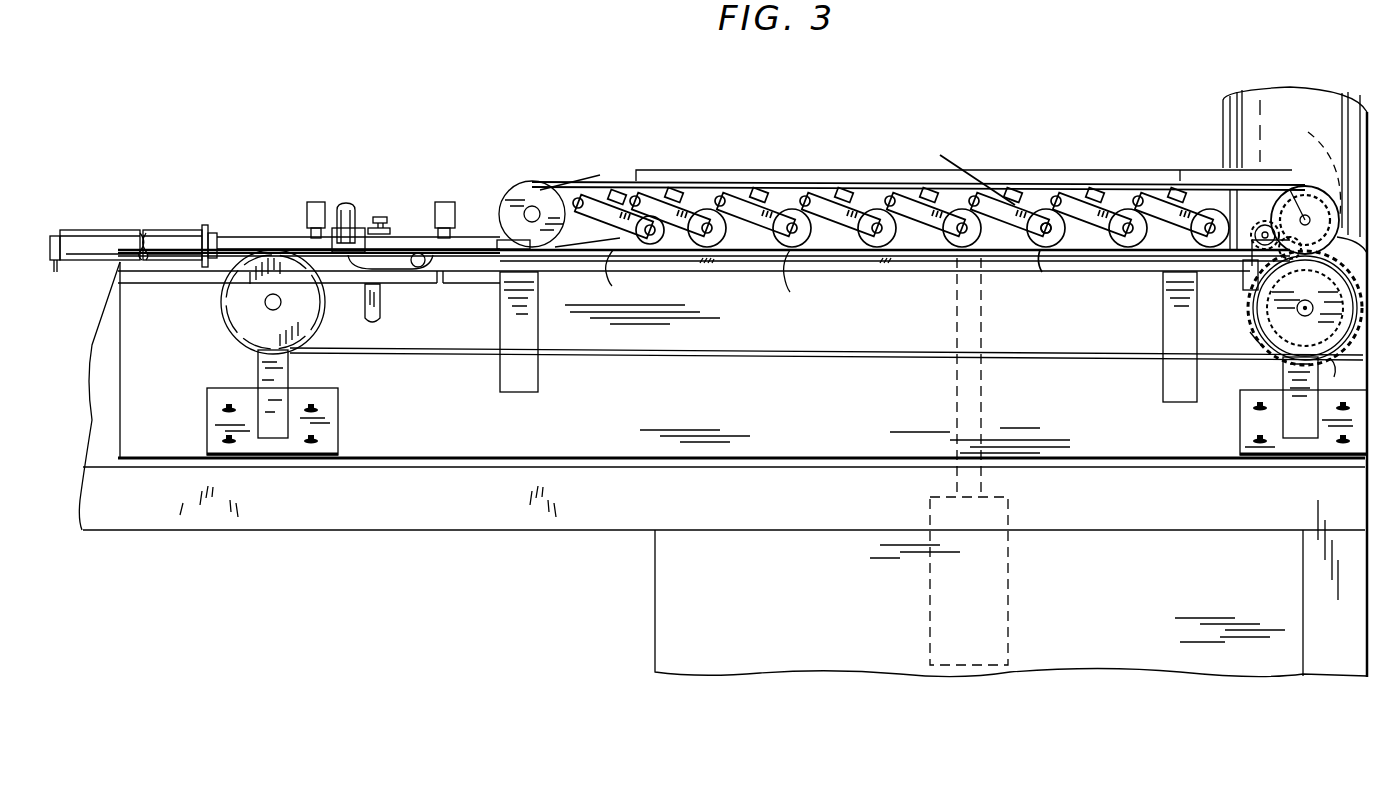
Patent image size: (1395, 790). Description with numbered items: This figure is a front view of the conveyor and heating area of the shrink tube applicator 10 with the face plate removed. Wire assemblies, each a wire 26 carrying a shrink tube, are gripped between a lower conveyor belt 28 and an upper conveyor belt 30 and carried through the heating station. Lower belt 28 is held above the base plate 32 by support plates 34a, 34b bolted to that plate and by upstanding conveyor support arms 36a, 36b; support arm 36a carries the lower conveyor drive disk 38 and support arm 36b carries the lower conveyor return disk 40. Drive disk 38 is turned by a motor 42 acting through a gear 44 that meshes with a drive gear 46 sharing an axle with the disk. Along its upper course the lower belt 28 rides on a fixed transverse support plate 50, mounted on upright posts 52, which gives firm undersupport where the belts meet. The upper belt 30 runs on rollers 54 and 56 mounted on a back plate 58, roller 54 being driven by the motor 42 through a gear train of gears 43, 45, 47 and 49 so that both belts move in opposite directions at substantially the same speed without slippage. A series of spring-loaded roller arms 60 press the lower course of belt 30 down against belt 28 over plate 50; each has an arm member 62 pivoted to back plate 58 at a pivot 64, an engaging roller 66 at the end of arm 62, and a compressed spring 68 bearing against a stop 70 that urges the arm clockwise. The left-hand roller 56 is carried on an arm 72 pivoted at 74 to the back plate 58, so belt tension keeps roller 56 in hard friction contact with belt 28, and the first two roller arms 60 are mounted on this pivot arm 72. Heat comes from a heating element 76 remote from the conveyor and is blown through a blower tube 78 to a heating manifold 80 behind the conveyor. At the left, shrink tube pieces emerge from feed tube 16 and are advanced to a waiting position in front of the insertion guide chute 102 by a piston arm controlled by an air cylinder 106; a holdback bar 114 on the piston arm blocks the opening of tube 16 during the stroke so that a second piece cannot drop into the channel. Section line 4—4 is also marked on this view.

The section line 4- 4 is at (112, 155).
The shrink tube applicator 10 is at (760, 158).
The feed tube 16 is at (350, 206).
The wire 26 is at (792, 280).
The lower conveyor belt 28 is at (637, 358).
The upper conveyor belt 30 is at (619, 180).
The base plate 32 is at (772, 432).
The support plate 34a is at (1244, 438).
The support plate 34b is at (325, 420).
The conveyor support arm 36a is at (1283, 385).
The conveyor support arm 36b is at (262, 380).
The lower conveyor drive disk 38 is at (1305, 308).
The lower conveyor return disk 40 is at (222, 314).
The motor 42 is at (1235, 117).
The gear 43 is at (1256, 337).
The gear 44 is at (1290, 190).
The gear 45 is at (1245, 284).
The drive gear 46 is at (1345, 380).
The gear 47 is at (1263, 221).
The gear 49 is at (1311, 159).
The fixed transverse support plate 50 is at (690, 266).
The support post 52 is at (510, 326).
The roller 54 is at (1322, 212).
The upper conveyor roller 56 is at (520, 192).
The back plate 58 is at (1223, 202).
The spring-loaded roller arm 60 is at (1033, 192).
The arm member 62 is at (985, 190).
The pivot 64 is at (964, 218).
The pivot pin 66 is at (1042, 256).
The compressed spring 68 is at (1020, 235).
The stop 70 is at (970, 168).
The arm 72 is at (578, 190).
The pivot 74 is at (668, 192).
The heating element 76 is at (1000, 566).
The blower tube 78 is at (982, 396).
The heating manifold 80 is at (1163, 256).
The insertion guide chute 102 is at (508, 240).
The air cylinder 106 is at (128, 226).
The shrink tube holdback bar 114 is at (272, 246).